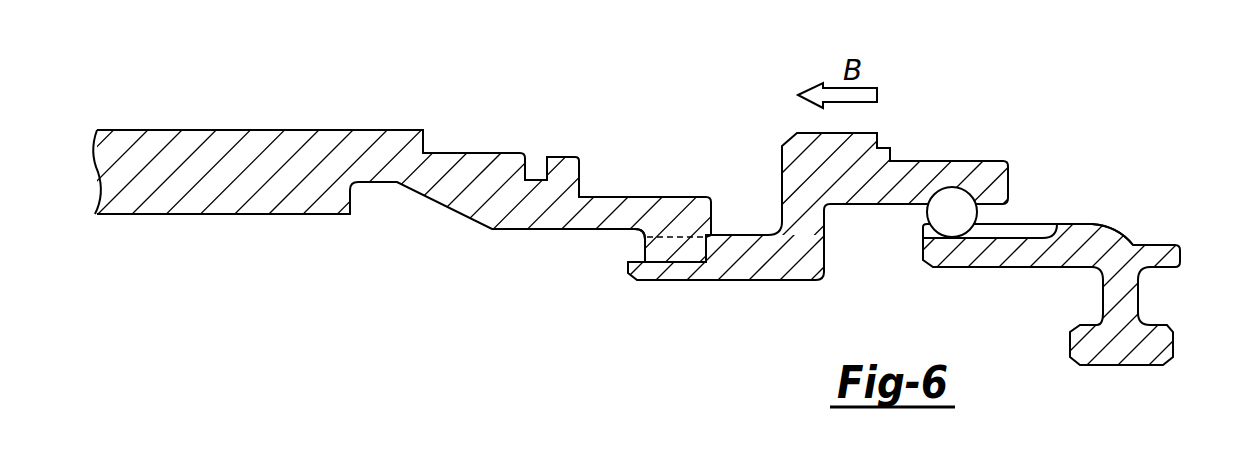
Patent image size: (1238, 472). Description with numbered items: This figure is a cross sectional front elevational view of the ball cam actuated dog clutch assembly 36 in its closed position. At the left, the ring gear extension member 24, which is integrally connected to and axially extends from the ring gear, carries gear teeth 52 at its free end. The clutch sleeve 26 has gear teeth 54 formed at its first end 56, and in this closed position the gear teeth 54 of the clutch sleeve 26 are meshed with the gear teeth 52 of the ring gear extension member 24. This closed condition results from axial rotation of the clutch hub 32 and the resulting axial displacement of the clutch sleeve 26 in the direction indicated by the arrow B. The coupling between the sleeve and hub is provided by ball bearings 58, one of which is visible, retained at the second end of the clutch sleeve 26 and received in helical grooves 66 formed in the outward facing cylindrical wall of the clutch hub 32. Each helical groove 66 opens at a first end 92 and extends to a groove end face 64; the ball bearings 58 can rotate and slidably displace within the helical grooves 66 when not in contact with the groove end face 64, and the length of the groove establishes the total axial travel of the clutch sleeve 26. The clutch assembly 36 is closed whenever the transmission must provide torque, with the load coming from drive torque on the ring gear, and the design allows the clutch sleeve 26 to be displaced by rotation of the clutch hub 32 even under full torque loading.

The ring gear extension member 24 is at (487, 215).
The clutch sleeve 26 is at (817, 153).
The clutch hub 32 is at (1120, 267).
The ball cam actuated dog clutch assembly 36 is at (1008, 100).
The gear teeth 52 is at (655, 253).
The gear teeth 54 is at (640, 252).
The first end 56 is at (672, 262).
The ball bearings 58 is at (952, 198).
The groove end face 64 is at (1043, 228).
The helical grooves 66 is at (997, 240).
The first end 92 is at (925, 235).